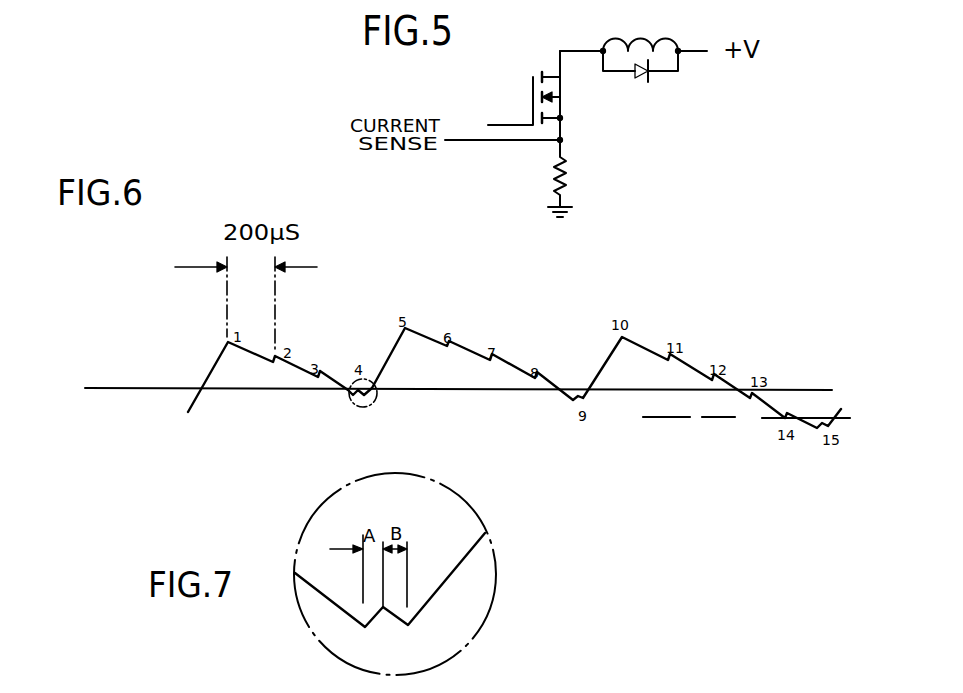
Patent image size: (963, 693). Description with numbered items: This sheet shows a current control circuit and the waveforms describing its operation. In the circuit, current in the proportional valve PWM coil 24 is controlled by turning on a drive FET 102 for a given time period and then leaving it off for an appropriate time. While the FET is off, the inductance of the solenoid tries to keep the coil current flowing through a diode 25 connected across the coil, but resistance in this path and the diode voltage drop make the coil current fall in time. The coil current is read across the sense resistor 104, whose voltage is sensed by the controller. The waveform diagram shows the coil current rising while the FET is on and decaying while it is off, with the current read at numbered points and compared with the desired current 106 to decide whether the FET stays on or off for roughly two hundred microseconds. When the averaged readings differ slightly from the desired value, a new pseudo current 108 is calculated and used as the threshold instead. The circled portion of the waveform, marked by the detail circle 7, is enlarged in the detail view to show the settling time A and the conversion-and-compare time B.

In FIG. 5, the proportional valve PWM coil 24 is at (648, 49).
In FIG. 5, the diode 25 is at (641, 76).
In FIG. 5, the drive FET 102 is at (568, 108).
In FIG. 5, the sense resistor 104 is at (556, 188).
In FIG. 6, the desired current 106 is at (118, 390).
In FIG. 6, the pseudo current 108 is at (725, 418).
In FIG. 6, the detail circle (FIG. 7 region) 7 is at (376, 399).